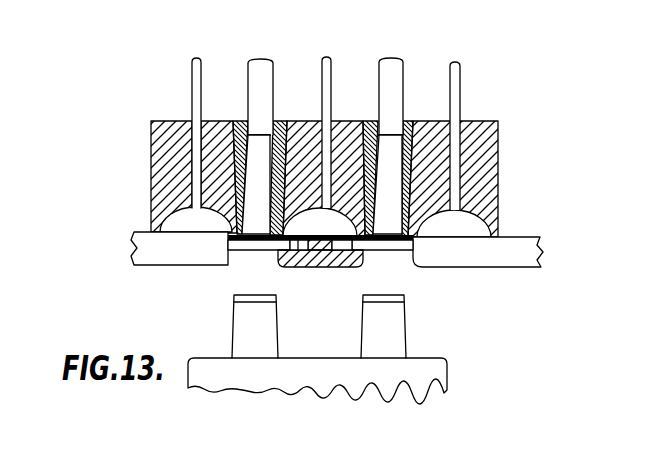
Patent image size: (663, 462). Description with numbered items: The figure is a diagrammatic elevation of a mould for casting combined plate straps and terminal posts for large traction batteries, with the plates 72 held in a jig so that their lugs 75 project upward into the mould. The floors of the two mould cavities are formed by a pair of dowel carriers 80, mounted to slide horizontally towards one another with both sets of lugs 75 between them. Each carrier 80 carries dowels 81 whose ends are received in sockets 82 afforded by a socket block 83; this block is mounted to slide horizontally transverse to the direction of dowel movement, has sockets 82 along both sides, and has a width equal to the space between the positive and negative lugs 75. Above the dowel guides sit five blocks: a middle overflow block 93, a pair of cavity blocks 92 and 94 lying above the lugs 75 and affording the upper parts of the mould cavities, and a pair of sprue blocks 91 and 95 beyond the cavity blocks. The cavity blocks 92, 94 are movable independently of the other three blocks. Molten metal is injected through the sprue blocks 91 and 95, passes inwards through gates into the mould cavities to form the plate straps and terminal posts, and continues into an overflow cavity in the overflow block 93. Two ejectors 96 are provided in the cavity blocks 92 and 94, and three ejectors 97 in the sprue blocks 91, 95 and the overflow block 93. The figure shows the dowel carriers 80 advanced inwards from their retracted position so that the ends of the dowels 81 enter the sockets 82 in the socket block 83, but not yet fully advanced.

The plates 72 is at (441, 377).
The lugs 75 is at (396, 339).
The dowel carriers 80 is at (133, 246).
The dowels 81 is at (252, 244).
The sockets 82 is at (300, 251).
The socket block 83 is at (348, 266).
The sprue block 91 is at (171, 126).
The cavity block 92 is at (244, 120).
The overflow block 93 is at (300, 122).
The cavity block 94 is at (369, 126).
The sprue block 95 is at (433, 126).
The ejectors 96 is at (251, 70).
The ejectors 97 is at (191, 63).